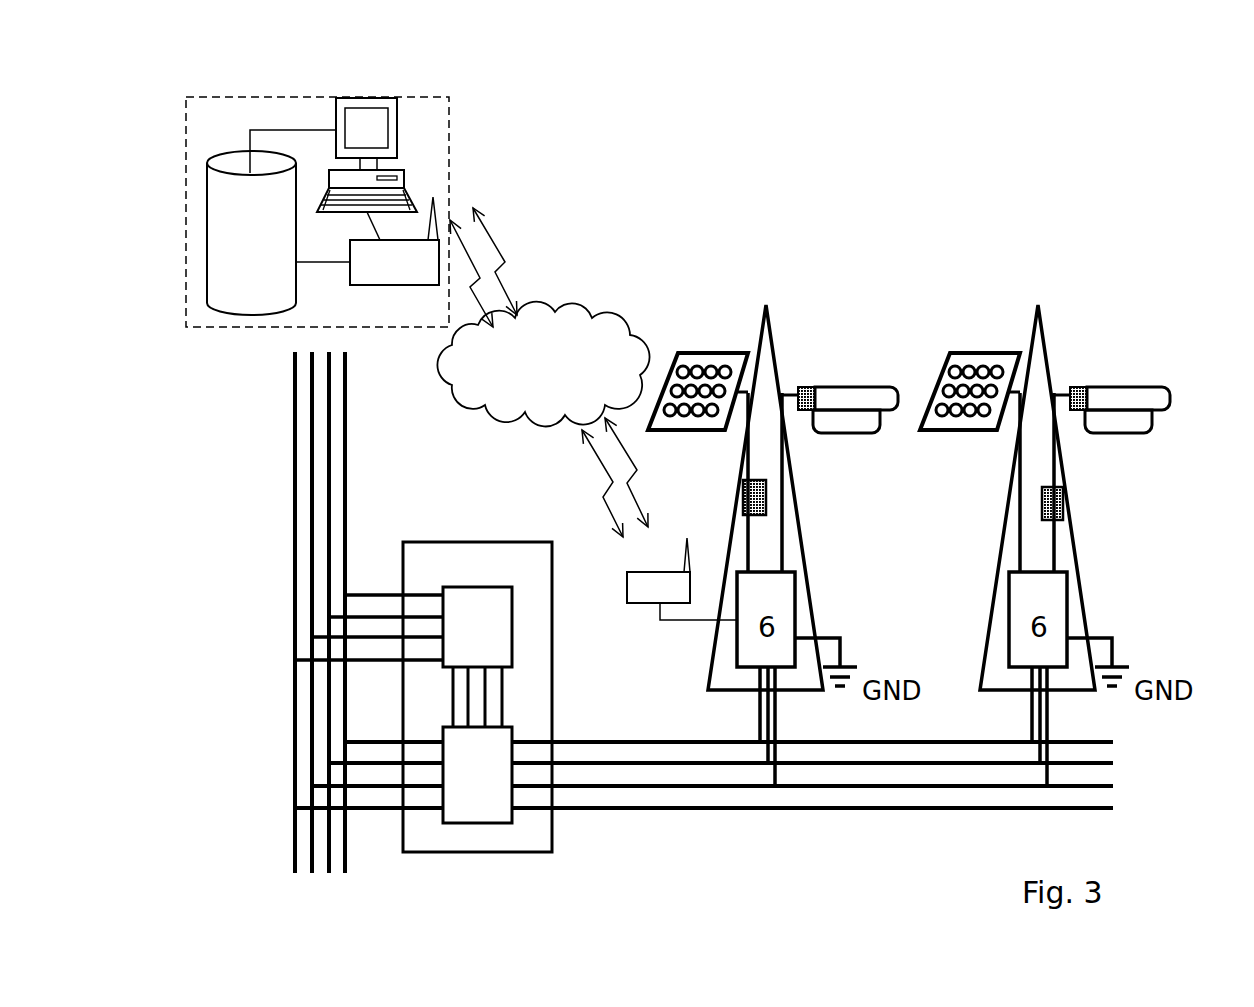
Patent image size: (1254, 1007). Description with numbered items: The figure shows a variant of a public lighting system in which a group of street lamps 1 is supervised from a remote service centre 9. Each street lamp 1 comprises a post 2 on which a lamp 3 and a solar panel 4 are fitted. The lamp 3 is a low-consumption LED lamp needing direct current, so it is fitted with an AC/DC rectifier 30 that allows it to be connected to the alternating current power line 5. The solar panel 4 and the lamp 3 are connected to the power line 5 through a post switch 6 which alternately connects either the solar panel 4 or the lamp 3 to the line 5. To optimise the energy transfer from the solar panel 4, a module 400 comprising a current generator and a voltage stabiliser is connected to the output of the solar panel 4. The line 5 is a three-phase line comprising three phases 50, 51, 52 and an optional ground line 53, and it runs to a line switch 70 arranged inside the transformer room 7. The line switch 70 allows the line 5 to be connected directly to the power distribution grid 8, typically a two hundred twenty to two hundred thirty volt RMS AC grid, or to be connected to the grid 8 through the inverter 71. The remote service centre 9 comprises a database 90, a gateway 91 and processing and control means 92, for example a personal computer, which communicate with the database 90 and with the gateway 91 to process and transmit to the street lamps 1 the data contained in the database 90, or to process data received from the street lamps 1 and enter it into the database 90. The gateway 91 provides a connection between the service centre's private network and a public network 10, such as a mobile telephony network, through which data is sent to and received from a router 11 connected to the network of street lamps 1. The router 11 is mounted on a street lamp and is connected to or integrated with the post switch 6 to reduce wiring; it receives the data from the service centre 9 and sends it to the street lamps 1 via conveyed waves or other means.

The street lamp 1 is at (777, 317).
The post 2 is at (807, 560).
The lamp 3 is at (848, 380).
The solar panel 4 is at (695, 357).
The power line 5 is at (822, 818).
The post switch 6 is at (965, 679).
The transformer room 7 is at (483, 540).
The power distribution grid 8 is at (355, 390).
The remote service centre 9 is at (452, 150).
The public network 10 is at (543, 364).
The router 11 is at (682, 579).
The AC/DC rectifier 30 is at (807, 387).
The phase 50 is at (1113, 742).
The phase 51 is at (1113, 763).
The phase 52 is at (1113, 786).
The ground line 53 is at (670, 808).
The line switch 70 is at (477, 775).
The inverter 71 is at (403, 657).
The database 90 is at (278, 222).
The gateway 91 is at (394, 241).
The processing and control means 92 is at (397, 120).
The module 400 is at (758, 500).